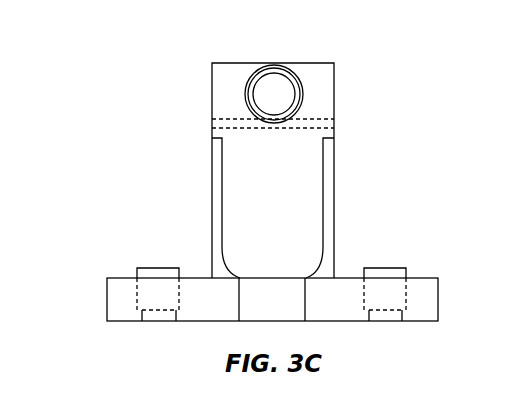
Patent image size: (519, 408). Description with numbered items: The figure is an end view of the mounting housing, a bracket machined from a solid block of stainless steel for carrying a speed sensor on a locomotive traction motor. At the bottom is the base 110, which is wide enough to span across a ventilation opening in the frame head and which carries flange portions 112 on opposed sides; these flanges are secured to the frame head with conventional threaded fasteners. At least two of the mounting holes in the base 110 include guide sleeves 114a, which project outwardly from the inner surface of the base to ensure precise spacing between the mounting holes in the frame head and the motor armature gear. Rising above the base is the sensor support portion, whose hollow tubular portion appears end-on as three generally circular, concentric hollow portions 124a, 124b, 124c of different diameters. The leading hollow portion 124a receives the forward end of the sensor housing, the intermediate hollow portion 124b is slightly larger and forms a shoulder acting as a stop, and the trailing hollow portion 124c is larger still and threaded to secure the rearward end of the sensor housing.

The base 110 is at (348, 278).
The flange portions 112 is at (120, 312).
The guide sleeves 114a is at (162, 268).
The leading hollow portion 124a is at (245, 95).
The intermediate hollow portion 124b is at (292, 73).
The trailing hollow portion 124c is at (303, 103).